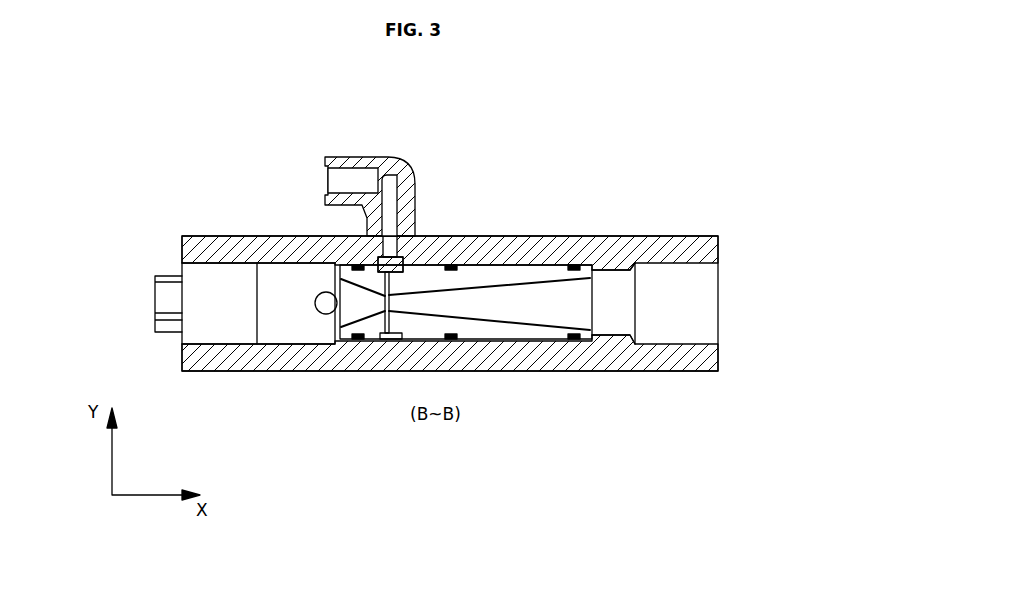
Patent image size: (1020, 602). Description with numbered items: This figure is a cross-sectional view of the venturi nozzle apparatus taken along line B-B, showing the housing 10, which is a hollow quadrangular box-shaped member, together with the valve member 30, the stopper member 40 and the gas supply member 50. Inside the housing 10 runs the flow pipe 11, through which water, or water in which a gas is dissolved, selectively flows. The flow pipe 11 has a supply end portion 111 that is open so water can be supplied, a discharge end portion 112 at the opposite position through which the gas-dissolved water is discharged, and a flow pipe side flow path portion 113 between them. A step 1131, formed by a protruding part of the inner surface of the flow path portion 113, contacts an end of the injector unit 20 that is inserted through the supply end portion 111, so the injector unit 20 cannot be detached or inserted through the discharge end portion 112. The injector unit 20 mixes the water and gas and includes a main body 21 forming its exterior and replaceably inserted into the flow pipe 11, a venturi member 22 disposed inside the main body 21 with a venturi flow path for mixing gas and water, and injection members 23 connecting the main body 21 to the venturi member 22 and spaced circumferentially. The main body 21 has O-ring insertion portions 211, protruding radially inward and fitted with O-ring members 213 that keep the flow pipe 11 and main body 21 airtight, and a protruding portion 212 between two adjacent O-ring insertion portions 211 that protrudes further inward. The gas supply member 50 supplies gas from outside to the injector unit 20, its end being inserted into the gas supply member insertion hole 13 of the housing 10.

The housing 10 is at (445, 300).
The flow pipe 11 is at (220, 258).
The supply end portion 111 is at (178, 340).
The discharge end portion 112 is at (720, 302).
The flow pipe side flow path portion 113 is at (234, 331).
The step 1131 is at (613, 268).
The gas supply member insertion hole 13 is at (432, 256).
The injector unit 20 is at (467, 269).
The main body 21 is at (532, 272).
The venturi member 22 is at (472, 302).
The injection members 23 is at (408, 253).
The O-ring insertion portion 211 is at (452, 340).
The protruding portion 212 is at (575, 340).
The O-ring member 213 is at (385, 340).
The valve member 30 is at (158, 292).
The stopper member 40 is at (323, 292).
The gas supply member 50 is at (340, 157).